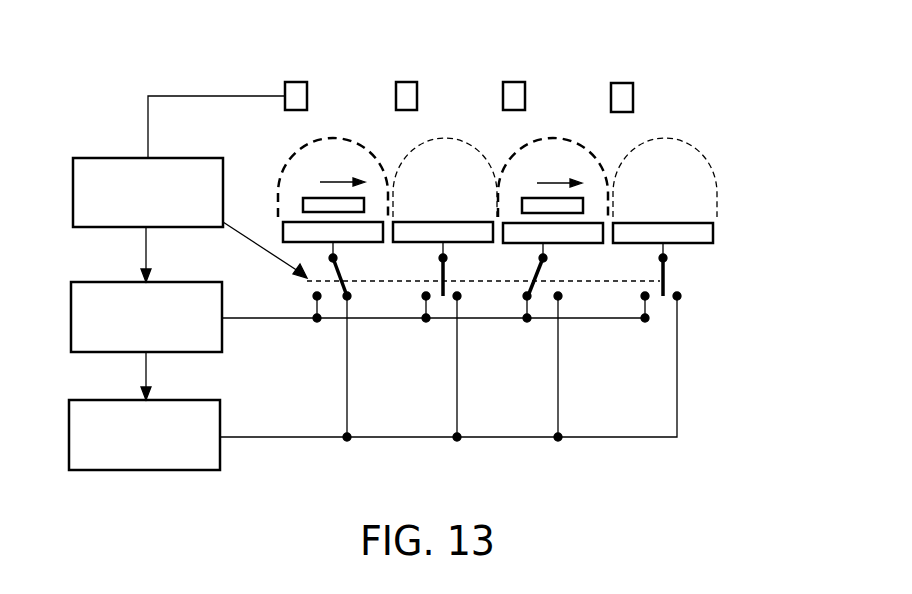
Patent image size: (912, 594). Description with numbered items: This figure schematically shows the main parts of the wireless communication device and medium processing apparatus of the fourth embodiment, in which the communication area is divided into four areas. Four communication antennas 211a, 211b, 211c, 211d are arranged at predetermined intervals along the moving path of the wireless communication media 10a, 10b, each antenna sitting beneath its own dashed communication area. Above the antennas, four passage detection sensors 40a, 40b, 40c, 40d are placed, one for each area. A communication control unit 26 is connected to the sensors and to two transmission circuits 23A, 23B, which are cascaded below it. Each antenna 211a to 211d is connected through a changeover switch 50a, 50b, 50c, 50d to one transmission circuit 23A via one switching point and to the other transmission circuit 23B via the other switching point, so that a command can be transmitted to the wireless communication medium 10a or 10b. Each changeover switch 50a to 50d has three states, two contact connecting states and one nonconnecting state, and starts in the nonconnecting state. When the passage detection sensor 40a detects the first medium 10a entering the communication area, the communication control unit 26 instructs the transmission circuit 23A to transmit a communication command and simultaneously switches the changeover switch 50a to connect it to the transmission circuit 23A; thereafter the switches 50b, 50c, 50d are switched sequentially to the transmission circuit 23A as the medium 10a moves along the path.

The communication control unit 26 is at (73, 198).
The transmission circuit 23A is at (71, 320).
The transmission circuit 23B is at (69, 437).
The passage detection sensor 40a is at (296, 82).
The passage detection sensor 40b is at (405, 82).
The passage detection sensor 40c is at (513, 82).
The passage detection sensor 40d is at (620, 83).
The wireless communication medium 10a is at (530, 198).
The wireless communication medium 10b is at (313, 198).
The communication antenna 211a is at (345, 237).
The communication antenna 211b is at (442, 222).
The communication antenna 211c is at (562, 237).
The communication antenna 211d is at (662, 223).
The changeover switch 50a is at (332, 306).
The changeover switch 50b is at (440, 306).
The changeover switch 50c is at (542, 306).
The changeover switch 50d is at (657, 306).